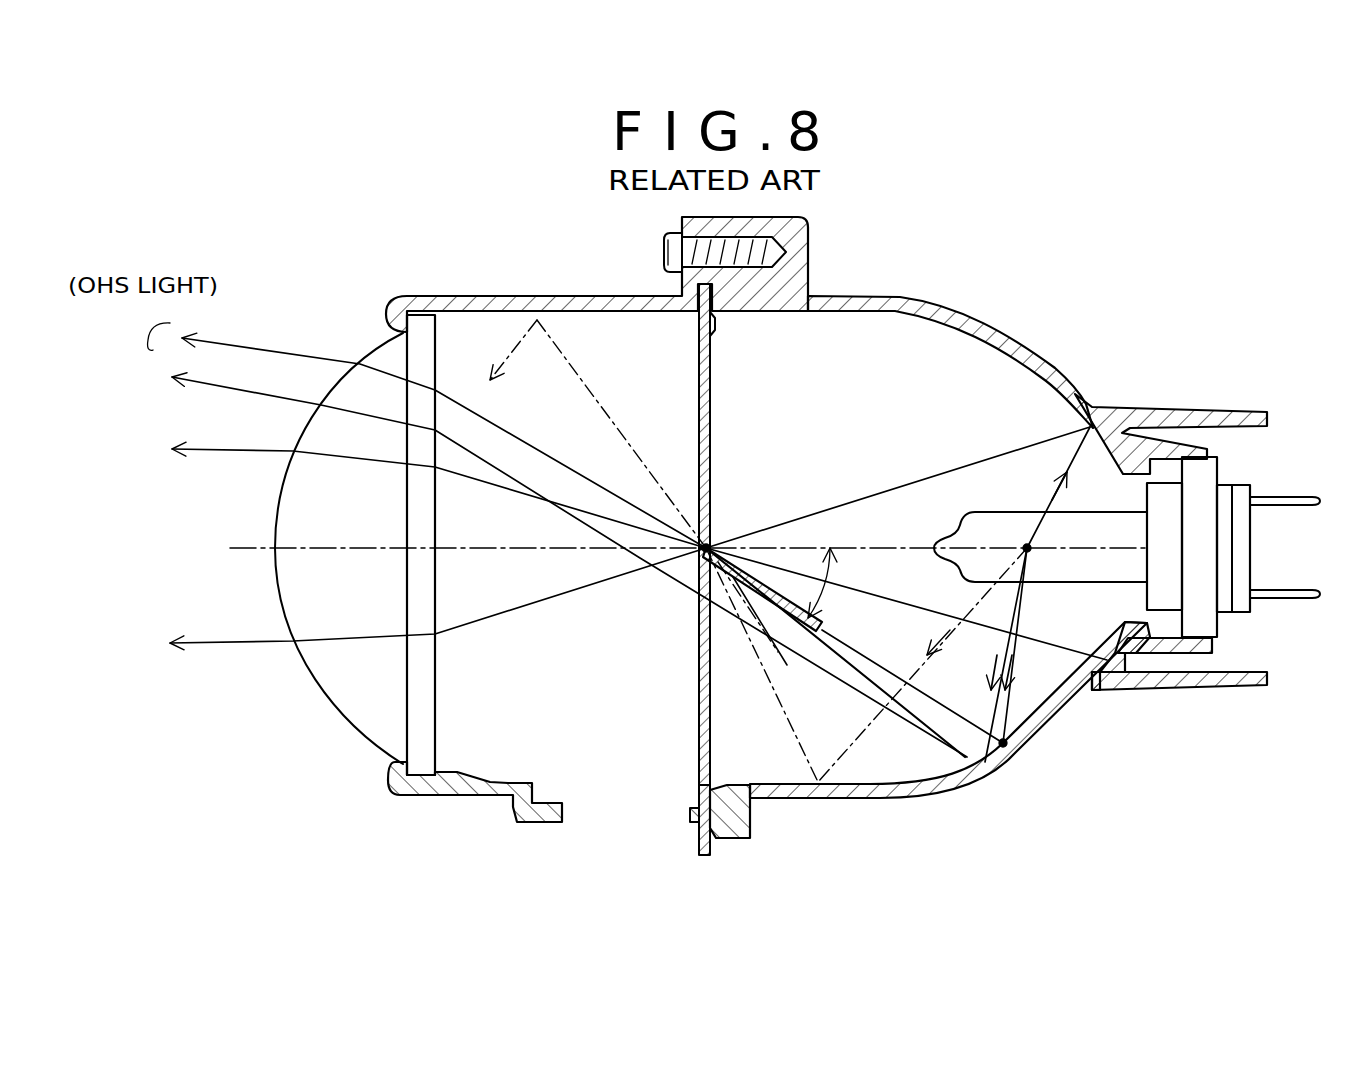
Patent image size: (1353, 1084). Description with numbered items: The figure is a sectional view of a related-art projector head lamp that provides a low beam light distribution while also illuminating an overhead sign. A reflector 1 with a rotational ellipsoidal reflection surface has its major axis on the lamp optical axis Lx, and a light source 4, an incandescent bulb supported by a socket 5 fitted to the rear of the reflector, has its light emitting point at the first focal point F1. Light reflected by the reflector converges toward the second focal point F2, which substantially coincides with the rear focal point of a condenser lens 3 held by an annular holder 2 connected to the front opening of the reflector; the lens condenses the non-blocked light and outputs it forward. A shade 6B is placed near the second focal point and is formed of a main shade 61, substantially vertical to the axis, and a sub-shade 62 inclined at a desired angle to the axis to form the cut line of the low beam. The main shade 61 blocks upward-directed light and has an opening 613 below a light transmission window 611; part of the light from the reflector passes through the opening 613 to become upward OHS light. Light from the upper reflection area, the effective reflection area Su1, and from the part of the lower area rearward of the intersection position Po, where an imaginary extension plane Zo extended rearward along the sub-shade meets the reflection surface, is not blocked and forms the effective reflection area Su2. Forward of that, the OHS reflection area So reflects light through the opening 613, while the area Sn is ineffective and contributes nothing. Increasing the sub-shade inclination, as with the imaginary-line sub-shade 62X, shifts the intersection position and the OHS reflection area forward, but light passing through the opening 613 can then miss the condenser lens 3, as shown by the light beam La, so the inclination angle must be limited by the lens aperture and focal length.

The reflector 1 is at (892, 297).
The holder 2 is at (580, 296).
The condenser lens 3 is at (366, 695).
The light source 4 is at (1093, 527).
The socket 5 is at (1223, 490).
The shade 6B is at (672, 673).
The main shade 61 is at (698, 734).
The light transmission window 611 is at (711, 442).
The opening 613 is at (698, 603).
The sub-shade 62 is at (825, 627).
The sub-shade 62X is at (787, 665).
The first focal point F1 is at (1027, 546).
The second focal point F2 is at (708, 546).
The intersection position Po is at (1010, 740).
The effective reflection area Su1 is at (1013, 368).
The effective reflection area Su2 is at (1093, 688).
The ineffective reflection area Sn is at (966, 787).
The OHS reflection area So is at (1025, 757).
The imaginary extension plane Zo is at (942, 700).
The light beam La is at (513, 368).
The lamp optical axis Lx is at (237, 547).